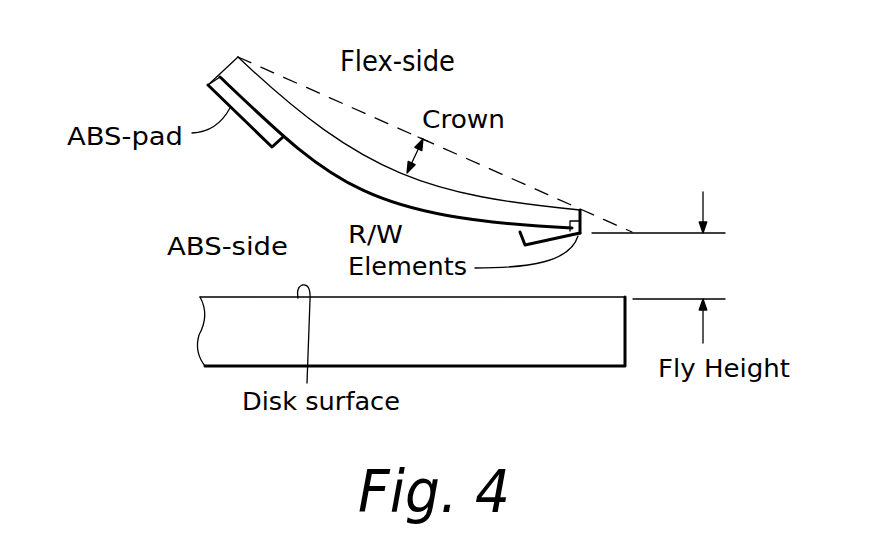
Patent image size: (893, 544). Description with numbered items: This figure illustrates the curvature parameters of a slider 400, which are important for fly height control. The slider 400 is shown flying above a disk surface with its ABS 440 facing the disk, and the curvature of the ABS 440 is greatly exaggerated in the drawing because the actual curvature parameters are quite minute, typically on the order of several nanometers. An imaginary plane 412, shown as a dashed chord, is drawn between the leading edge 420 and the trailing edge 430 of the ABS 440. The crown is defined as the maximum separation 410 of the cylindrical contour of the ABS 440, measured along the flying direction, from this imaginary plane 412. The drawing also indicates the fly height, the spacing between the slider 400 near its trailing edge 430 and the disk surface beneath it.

The slider 400 is at (603, 64).
The maximum separation 410 is at (416, 163).
The imaginary plane 412 is at (546, 183).
The leading edge 420 is at (187, 58).
The trailing edge 430 is at (582, 212).
The ABS 440 is at (297, 188).